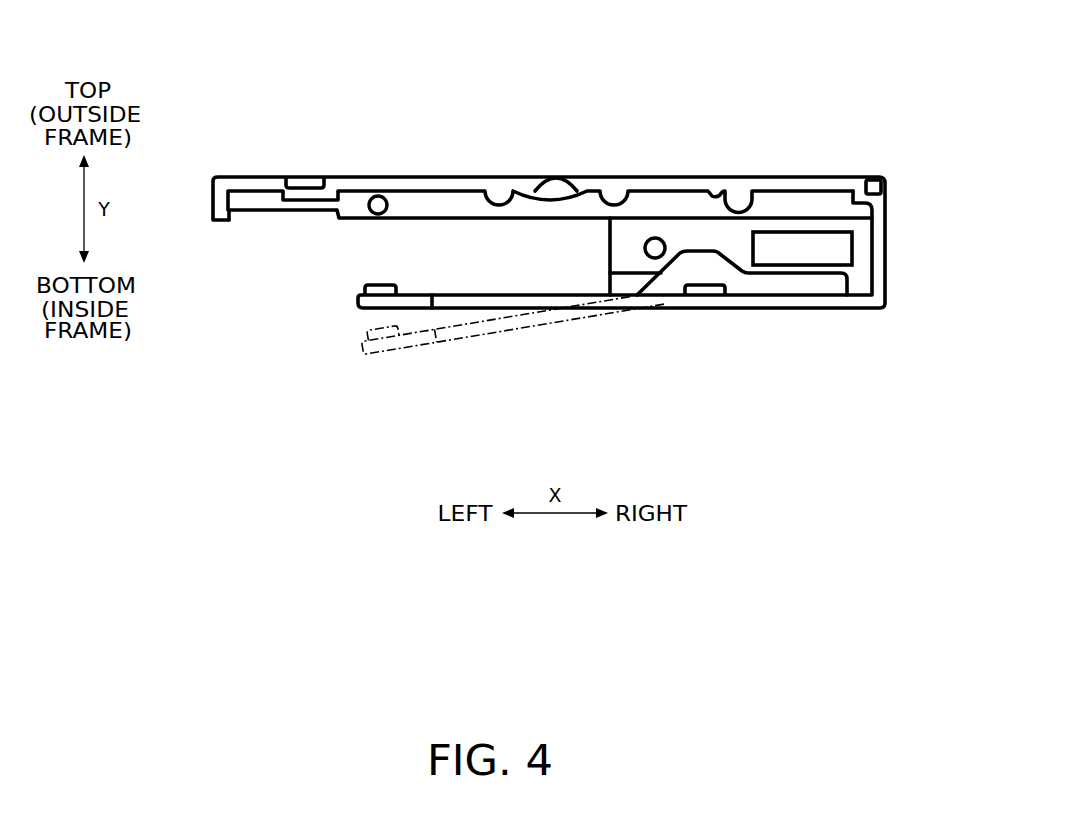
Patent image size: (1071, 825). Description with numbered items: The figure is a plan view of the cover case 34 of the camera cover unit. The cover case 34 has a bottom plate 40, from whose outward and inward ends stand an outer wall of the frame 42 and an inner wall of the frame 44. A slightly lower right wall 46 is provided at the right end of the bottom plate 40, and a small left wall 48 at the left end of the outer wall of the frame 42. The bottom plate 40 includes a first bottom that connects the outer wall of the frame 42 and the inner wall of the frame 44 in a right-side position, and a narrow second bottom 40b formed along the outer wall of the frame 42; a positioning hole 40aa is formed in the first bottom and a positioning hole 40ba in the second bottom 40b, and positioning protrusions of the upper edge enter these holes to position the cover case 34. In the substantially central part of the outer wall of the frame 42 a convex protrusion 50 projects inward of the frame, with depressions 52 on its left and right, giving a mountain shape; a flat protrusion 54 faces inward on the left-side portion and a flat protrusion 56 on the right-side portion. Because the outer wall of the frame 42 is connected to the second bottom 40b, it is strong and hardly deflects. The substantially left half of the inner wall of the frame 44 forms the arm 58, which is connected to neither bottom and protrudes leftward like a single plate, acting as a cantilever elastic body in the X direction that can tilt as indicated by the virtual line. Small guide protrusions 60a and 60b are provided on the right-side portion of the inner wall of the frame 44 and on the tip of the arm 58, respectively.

The cover case 34 is at (903, 86).
The bottom plate 40 is at (733, 244).
The second bottom 40b is at (435, 203).
The positioning hole 40ba is at (375, 213).
The positioning hole 40aa is at (645, 248).
The outer wall of the frame 42 is at (701, 187).
The inner wall of the frame 44 is at (807, 304).
The right wall 46 is at (887, 233).
The left wall 48 is at (212, 203).
The protrusion 50 is at (555, 197).
The depressions 52 is at (481, 189).
The flat protrusion 54 is at (307, 193).
The flat protrusion 56 is at (752, 206).
The arm 58 is at (513, 298).
The guide protrusion 60a is at (713, 277).
The guide protrusion 60b is at (372, 287).